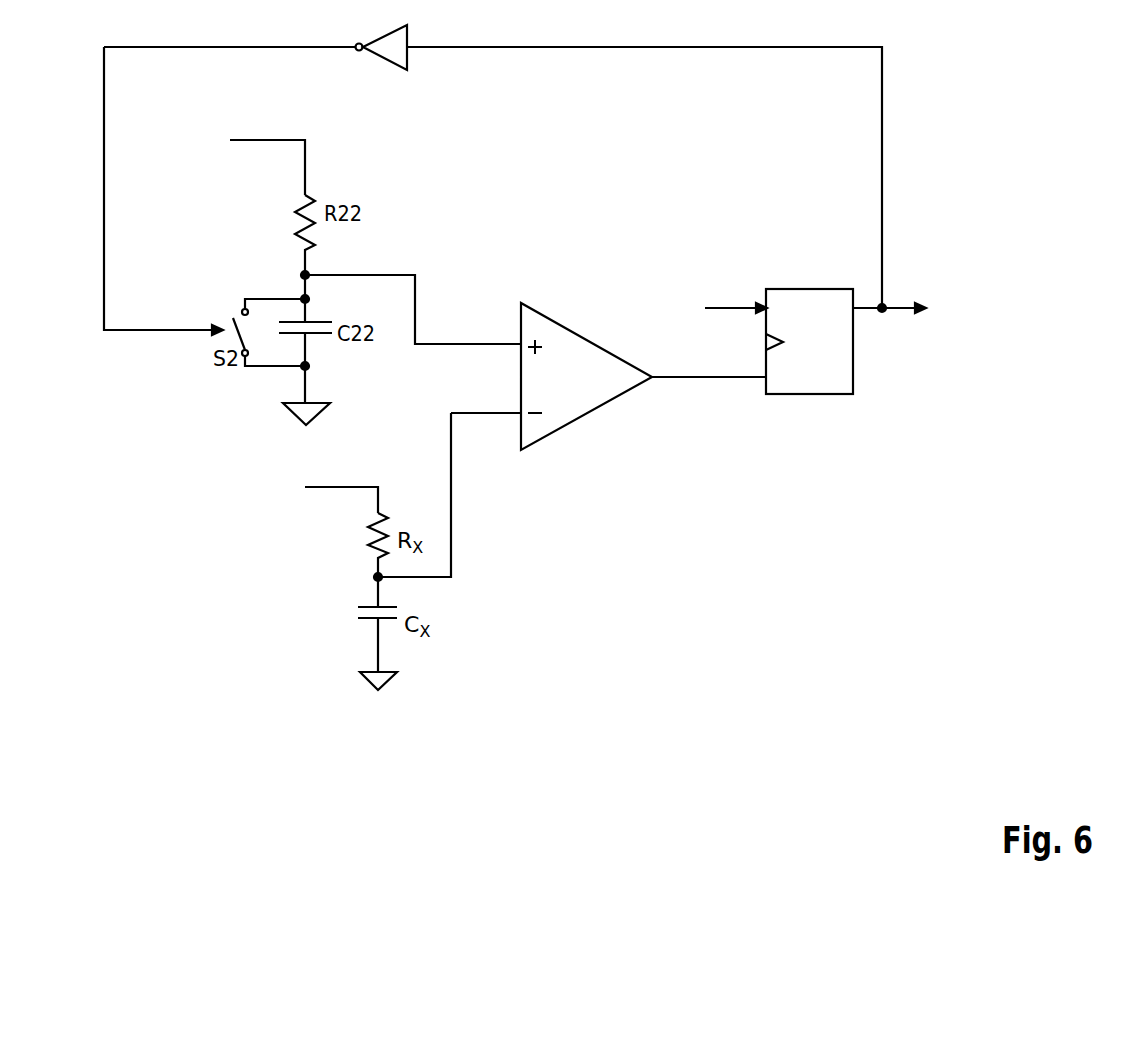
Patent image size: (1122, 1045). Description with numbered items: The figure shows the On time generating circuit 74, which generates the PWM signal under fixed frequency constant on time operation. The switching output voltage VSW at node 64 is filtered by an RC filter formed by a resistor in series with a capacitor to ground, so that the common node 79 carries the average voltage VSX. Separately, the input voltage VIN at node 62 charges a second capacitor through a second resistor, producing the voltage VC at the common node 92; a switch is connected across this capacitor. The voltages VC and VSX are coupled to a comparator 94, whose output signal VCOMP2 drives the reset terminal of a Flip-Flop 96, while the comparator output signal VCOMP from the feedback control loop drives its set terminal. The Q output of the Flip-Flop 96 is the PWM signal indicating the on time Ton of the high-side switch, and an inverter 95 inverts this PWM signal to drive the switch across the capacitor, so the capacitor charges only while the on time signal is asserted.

The On time generating circuit 74 is at (981, 64).
The inverter 95 is at (380, 63).
The input voltage node 62 is at (260, 143).
The common node 92 is at (398, 275).
The comparator 94 is at (565, 425).
The Flip-Flop 96 is at (813, 289).
The common node 79 is at (451, 508).
The switching output voltage node 64 is at (331, 490).